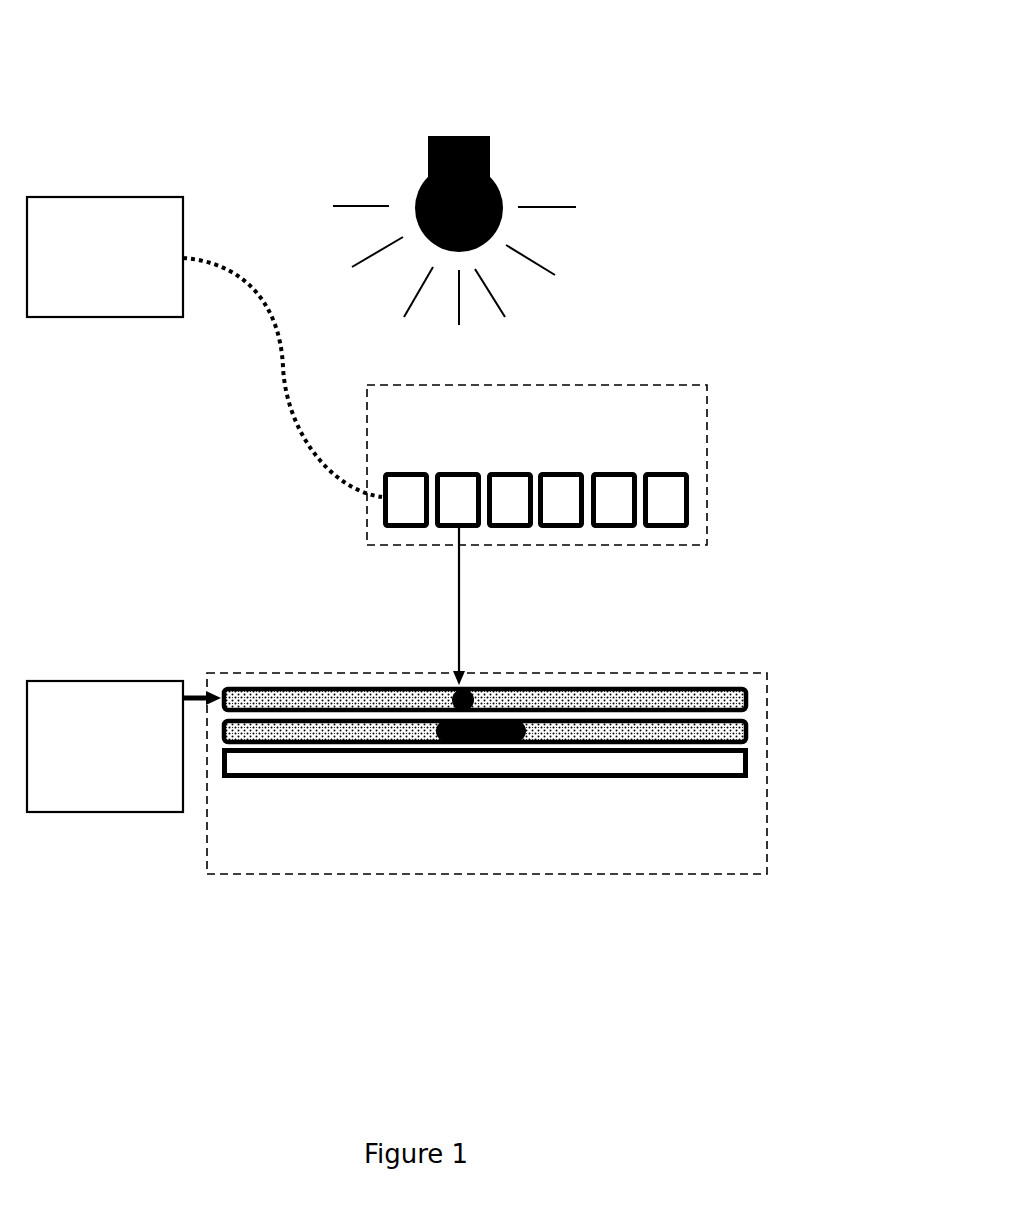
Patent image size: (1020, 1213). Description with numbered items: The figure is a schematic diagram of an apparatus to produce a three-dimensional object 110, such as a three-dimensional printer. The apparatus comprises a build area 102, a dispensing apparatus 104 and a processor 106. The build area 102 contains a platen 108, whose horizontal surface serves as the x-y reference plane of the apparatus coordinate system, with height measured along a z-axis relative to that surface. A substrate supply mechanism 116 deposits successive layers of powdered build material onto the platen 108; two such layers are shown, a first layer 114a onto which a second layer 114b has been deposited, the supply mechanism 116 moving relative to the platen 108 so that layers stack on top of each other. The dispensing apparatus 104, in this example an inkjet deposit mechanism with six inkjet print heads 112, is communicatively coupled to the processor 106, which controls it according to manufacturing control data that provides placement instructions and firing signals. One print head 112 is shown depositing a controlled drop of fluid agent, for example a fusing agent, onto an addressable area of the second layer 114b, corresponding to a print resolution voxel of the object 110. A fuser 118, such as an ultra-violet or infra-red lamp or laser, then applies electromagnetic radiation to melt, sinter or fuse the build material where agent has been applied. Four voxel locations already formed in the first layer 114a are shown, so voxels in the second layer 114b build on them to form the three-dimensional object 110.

The build area 102 is at (487, 773).
The dispensing apparatus 104 is at (537, 465).
The processor 106 is at (204, 347).
The platen 108 is at (311, 790).
The three-dimensional object 110 is at (436, 696).
The inkjet print head 112 is at (481, 536).
The first layer of powdered substrate 114a is at (758, 727).
The second layer of powdered substrate 114b is at (758, 694).
The substrate supply mechanism 116 is at (124, 746).
The fuser 118 is at (392, 168).